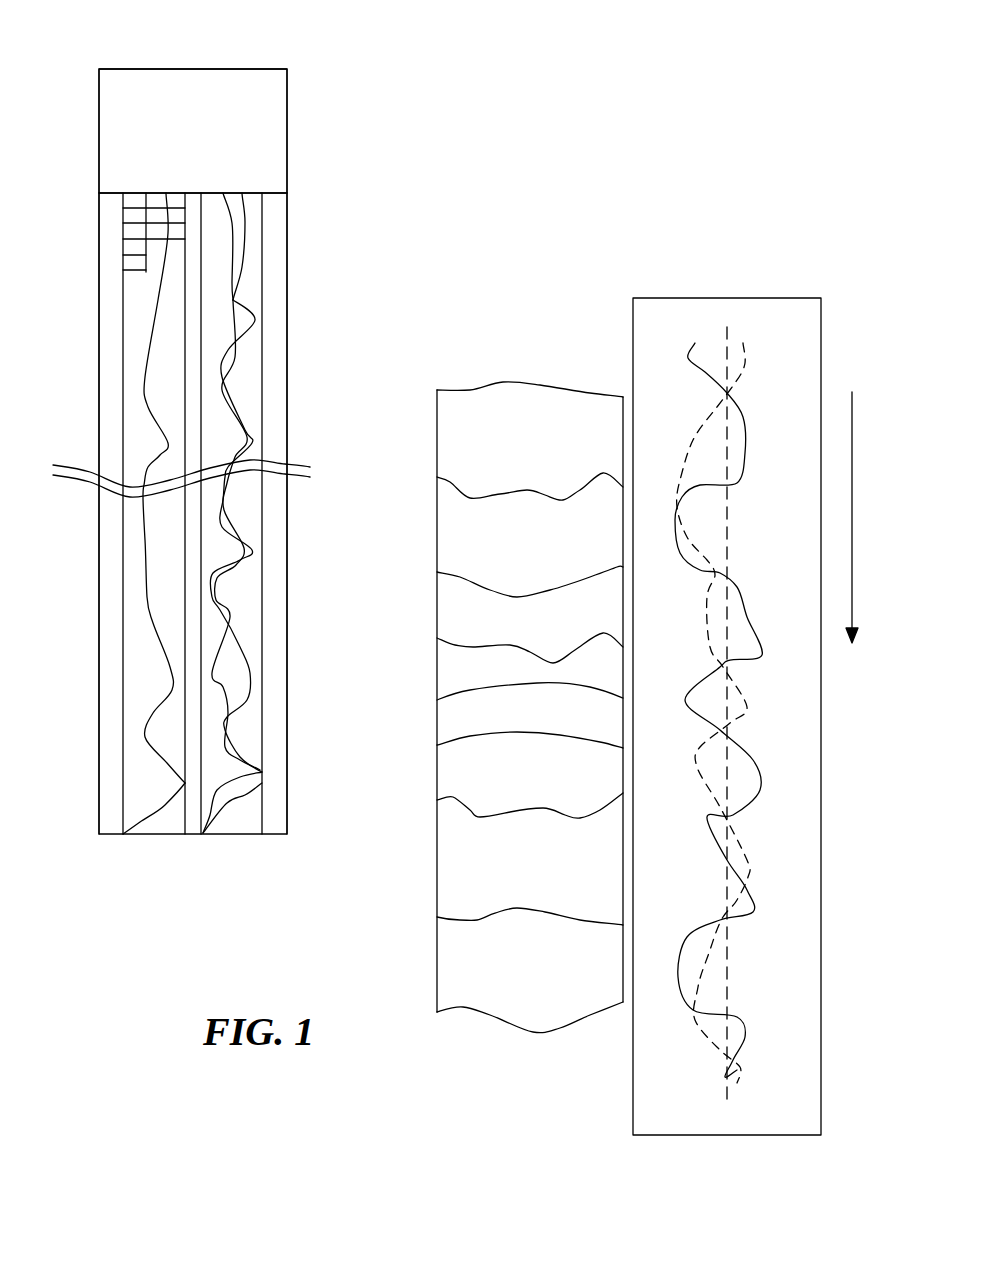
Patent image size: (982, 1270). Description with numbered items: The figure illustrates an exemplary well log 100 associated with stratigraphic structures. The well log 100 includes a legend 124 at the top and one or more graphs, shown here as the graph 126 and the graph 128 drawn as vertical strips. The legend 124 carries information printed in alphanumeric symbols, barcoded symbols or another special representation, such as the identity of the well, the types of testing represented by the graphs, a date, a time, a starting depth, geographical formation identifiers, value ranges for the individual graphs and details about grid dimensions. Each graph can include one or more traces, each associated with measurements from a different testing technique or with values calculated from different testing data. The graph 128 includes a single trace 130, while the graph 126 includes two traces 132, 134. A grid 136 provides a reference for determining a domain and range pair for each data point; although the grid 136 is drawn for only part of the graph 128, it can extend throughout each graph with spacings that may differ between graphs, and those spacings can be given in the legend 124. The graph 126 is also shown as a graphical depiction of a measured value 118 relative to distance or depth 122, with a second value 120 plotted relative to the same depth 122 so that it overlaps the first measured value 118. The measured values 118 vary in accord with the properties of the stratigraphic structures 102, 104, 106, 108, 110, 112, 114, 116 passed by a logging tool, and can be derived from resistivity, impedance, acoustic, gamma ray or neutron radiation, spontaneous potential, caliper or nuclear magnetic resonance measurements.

The well log 100 is at (303, 97).
The stratigraphic structure 102 is at (437, 437).
The stratigraphic structure 104 is at (437, 535).
The stratigraphic structure 106 is at (437, 608).
The stratigraphic structure 108 is at (437, 670).
The stratigraphic structure 110 is at (437, 717).
The stratigraphic structure 112 is at (437, 782).
The stratigraphic structure 114 is at (437, 855).
The stratigraphic structure 116 is at (437, 965).
The measured value 118 is at (687, 358).
The second value 120 is at (743, 417).
The distance or depth 122 is at (852, 547).
The legend 124 is at (287, 153).
The graph 126 is at (267, 322).
The graph 128 is at (123, 333).
The trace 130 is at (160, 277).
The trace 132 is at (242, 222).
The trace 134 is at (235, 263).
The grid 136 is at (135, 223).